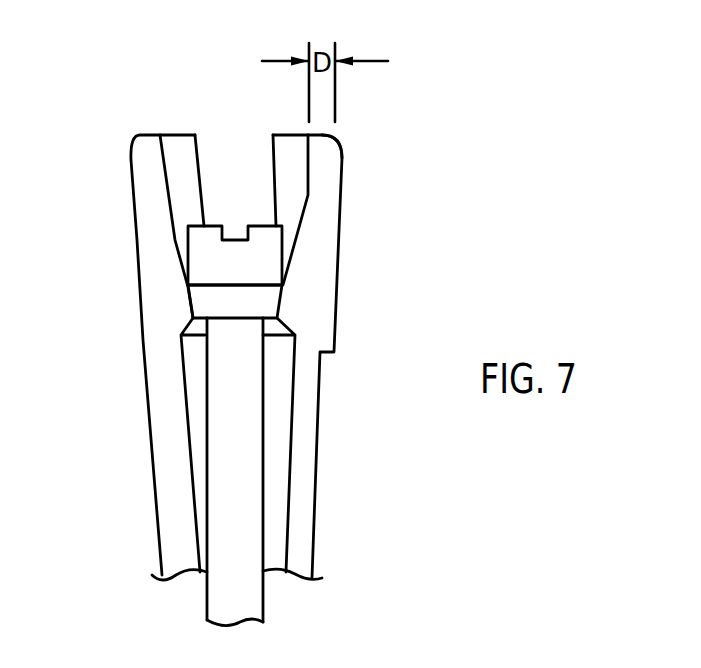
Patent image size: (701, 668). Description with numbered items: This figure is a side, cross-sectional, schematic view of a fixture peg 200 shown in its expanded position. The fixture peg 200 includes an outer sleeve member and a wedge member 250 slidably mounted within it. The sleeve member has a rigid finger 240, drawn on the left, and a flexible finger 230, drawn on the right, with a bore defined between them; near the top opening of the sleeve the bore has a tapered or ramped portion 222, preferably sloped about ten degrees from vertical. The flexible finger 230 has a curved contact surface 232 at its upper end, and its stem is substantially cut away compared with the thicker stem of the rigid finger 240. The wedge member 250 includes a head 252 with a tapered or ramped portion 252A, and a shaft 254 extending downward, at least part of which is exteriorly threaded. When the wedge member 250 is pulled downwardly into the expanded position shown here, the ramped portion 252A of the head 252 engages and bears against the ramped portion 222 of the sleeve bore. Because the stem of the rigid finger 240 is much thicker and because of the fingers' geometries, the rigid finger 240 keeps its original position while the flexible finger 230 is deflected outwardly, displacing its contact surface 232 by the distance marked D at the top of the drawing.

The fixture peg 200 is at (446, 232).
The tapered portion 222 is at (298, 203).
The flexible finger 230 is at (364, 340).
The curved contact surface 232 is at (340, 150).
The rigid finger 240 is at (153, 256).
The wedge member 250 is at (217, 180).
The head 252 is at (202, 266).
The ramped portion 252A is at (282, 297).
The shaft 254 is at (263, 451).